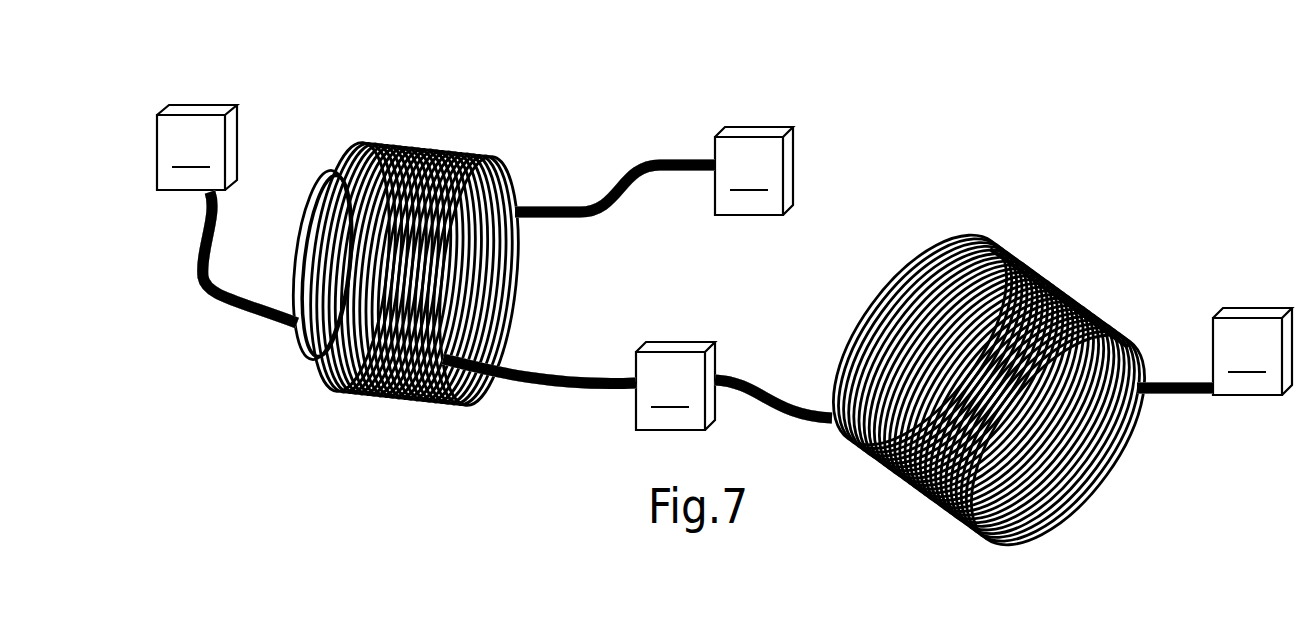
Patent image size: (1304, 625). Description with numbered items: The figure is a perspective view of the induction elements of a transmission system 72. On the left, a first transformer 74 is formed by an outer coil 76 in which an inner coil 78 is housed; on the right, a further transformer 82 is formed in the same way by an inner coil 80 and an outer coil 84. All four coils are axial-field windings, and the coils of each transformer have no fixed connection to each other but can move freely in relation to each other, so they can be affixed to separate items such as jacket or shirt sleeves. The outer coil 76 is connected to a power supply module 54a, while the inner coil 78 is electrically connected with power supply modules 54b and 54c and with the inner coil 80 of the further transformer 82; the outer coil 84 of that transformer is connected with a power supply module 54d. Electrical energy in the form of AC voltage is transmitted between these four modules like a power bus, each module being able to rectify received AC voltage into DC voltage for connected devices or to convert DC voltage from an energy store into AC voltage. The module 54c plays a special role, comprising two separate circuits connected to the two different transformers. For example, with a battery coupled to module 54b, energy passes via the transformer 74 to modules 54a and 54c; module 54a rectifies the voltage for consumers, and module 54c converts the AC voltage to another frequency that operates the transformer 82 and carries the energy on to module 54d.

The transmission system 72 is at (878, 155).
The first transformer 74 is at (427, 125).
The outer coil 76 is at (510, 176).
The inner coil 78 is at (303, 218).
The inner coil 80 is at (1112, 470).
The further transformer 82 is at (1044, 240).
The outer coil 84 is at (1098, 302).
The power supply module 54a is at (754, 171).
The power supply module 54b is at (197, 147).
The power supply module 54c is at (675, 386).
The power supply module 54d is at (1252, 351).